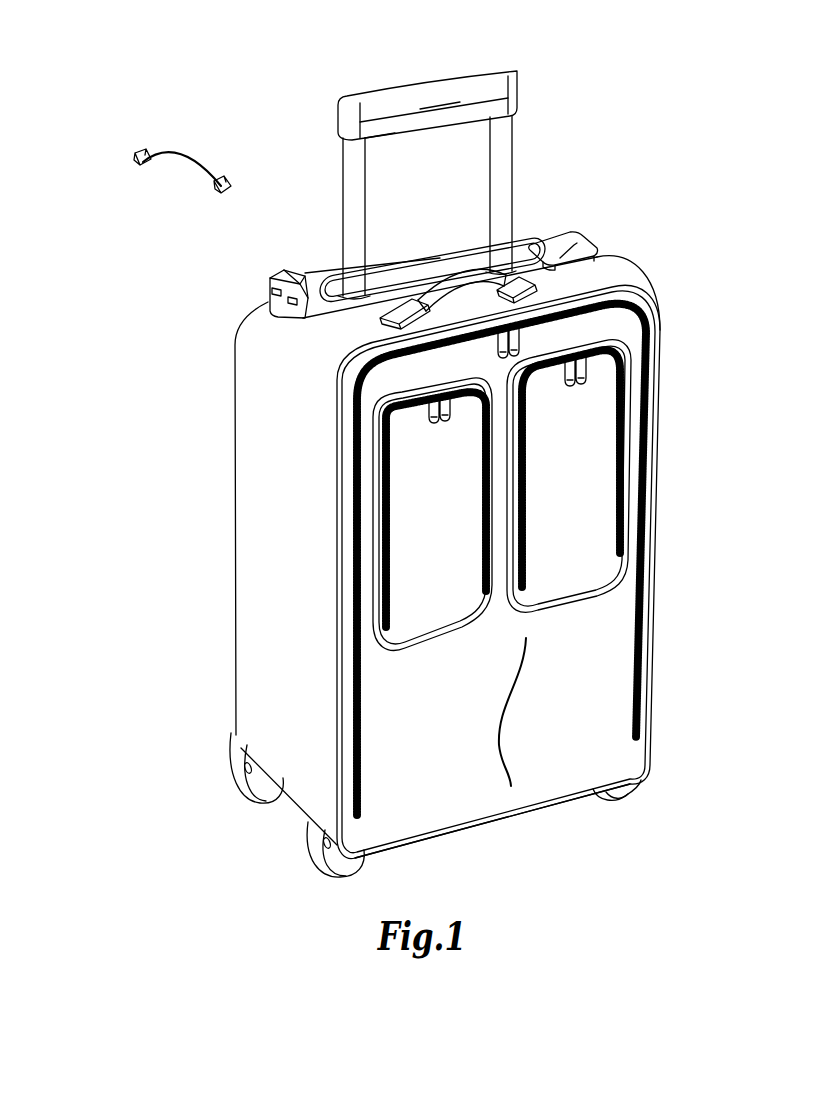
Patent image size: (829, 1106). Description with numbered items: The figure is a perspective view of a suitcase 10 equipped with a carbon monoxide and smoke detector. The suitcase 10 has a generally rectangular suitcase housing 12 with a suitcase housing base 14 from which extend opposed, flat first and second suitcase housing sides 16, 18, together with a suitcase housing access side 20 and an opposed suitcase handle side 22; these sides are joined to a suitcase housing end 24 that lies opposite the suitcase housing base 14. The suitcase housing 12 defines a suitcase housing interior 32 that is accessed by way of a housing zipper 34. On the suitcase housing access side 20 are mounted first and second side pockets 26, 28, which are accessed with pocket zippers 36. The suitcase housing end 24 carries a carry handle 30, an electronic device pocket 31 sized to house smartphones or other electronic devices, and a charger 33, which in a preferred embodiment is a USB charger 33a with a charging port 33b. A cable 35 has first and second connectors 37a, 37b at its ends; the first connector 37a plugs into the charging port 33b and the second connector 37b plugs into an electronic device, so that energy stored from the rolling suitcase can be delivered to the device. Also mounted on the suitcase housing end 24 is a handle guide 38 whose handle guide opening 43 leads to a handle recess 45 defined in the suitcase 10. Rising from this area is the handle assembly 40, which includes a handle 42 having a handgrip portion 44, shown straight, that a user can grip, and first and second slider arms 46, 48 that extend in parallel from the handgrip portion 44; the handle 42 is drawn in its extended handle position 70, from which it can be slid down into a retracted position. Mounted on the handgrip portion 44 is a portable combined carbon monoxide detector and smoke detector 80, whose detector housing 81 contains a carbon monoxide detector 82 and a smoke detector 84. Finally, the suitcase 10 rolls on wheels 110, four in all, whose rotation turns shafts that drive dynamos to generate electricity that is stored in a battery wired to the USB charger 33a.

The suitcase 10 is at (600, 198).
The suitcase housing 12 is at (580, 262).
The suitcase housing base 14 is at (518, 824).
The first suitcase housing side 16 is at (250, 495).
The second suitcase housing side 18 is at (655, 566).
The suitcase housing access side 20 is at (499, 693).
The suitcase handle side 22 is at (230, 450).
The suitcase housing end 24 is at (598, 273).
The first side pocket 26 is at (429, 528).
The second side pocket 28 is at (562, 488).
The carry handle 30 is at (470, 263).
The electronic device pocket 31 is at (570, 240).
The suitcase housing interior 32 is at (610, 648).
The charger 33 is at (283, 263).
The USB charger 33a is at (272, 288).
The charging port 33b is at (286, 300).
The housing zipper 34 is at (647, 524).
The cable 35 is at (145, 149).
The pocket zippers 36 is at (627, 345).
The first connector 37a is at (135, 170).
The second connector 37b is at (214, 188).
The handle guide 38 is at (370, 290).
The handle assembly 40 is at (500, 129).
The handle 42 is at (347, 120).
The handle guide opening 43 is at (336, 289).
The handgrip portion 44 is at (420, 105).
The handle recess 45 is at (519, 260).
The first slider arm 46 is at (348, 192).
The second slider arm 48 is at (506, 165).
The extended handle position 70 is at (330, 154).
The portable combined carbon monoxide detector and smoke detector 80 is at (407, 130).
The detector housing 81 is at (438, 118).
The carbon monoxide detector 82 is at (387, 137).
The smoke detector 84 is at (465, 118).
The wheels 110 is at (240, 776).